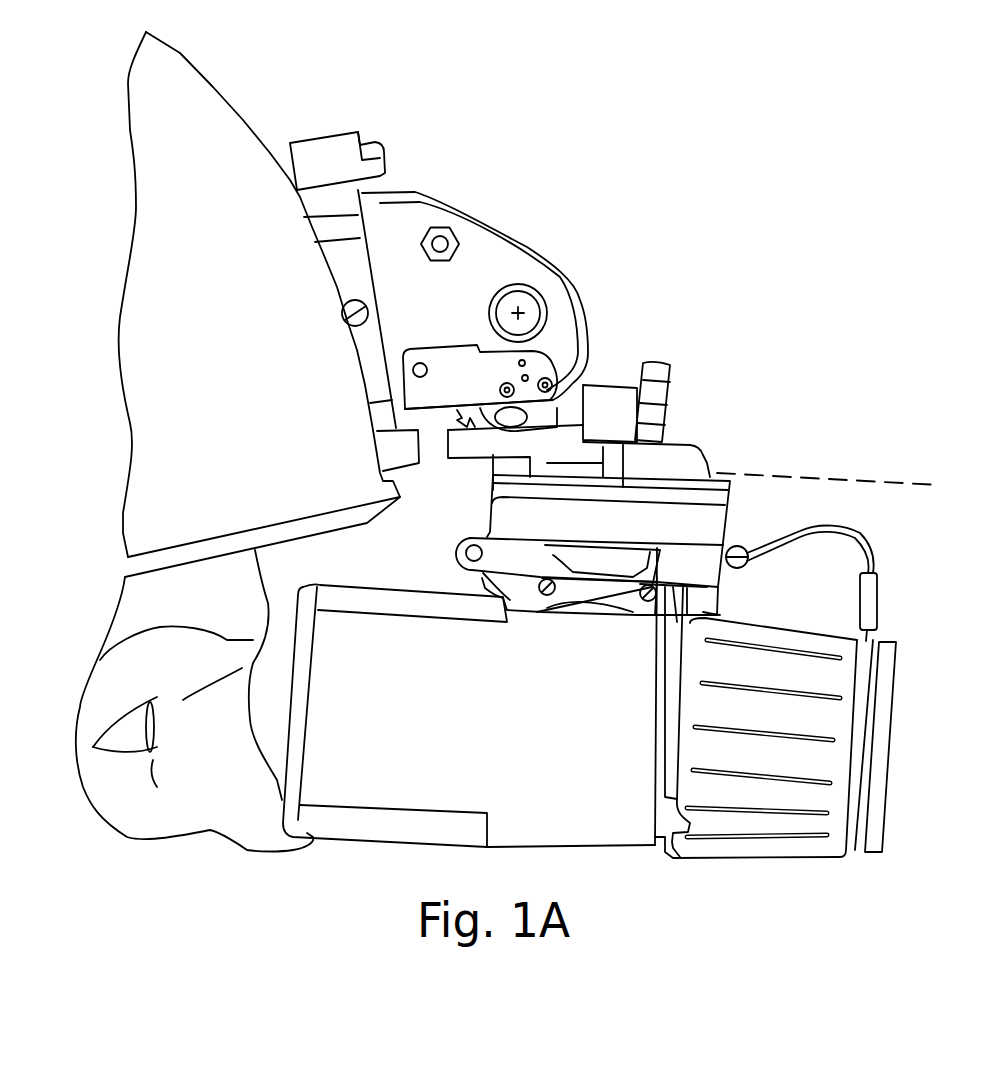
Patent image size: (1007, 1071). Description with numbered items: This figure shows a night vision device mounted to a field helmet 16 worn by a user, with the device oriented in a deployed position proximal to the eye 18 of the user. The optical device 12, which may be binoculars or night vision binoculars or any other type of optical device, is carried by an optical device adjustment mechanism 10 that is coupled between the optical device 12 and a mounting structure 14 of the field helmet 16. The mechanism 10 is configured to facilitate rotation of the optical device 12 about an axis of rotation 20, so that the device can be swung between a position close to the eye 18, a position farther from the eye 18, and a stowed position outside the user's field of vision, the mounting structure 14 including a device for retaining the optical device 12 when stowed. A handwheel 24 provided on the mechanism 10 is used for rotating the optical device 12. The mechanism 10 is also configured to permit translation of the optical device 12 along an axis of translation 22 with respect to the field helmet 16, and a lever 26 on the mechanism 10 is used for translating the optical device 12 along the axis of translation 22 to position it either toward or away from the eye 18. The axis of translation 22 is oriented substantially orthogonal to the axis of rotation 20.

The optical device adjustment mechanism 10 is at (705, 415).
The optical device 12 is at (893, 694).
The mounting structure 14 is at (413, 213).
The field helmet 16 is at (236, 222).
The eye 18 is at (160, 737).
The axis of rotation 20 is at (524, 306).
The axis of translation 22 is at (884, 481).
The handwheel 24 is at (670, 380).
The lever 26 is at (613, 447).